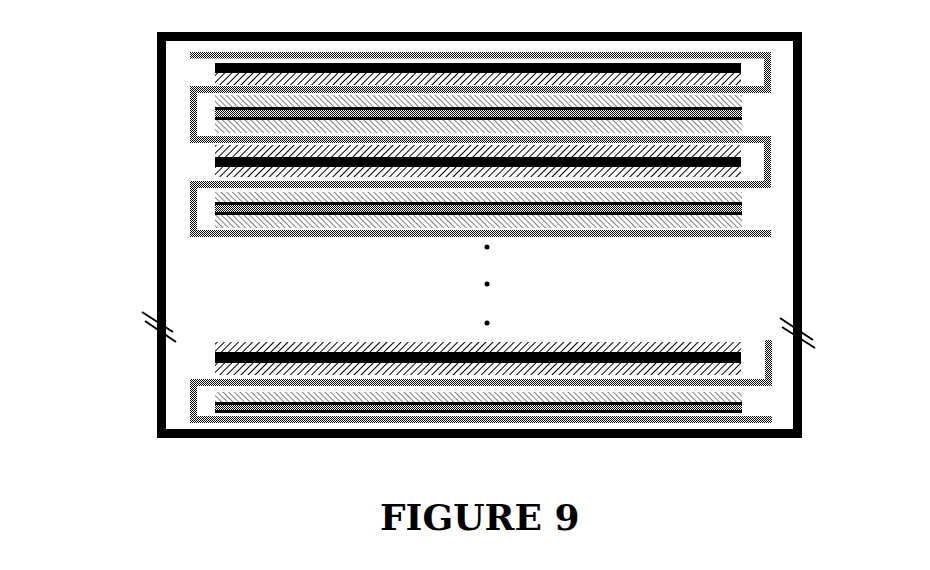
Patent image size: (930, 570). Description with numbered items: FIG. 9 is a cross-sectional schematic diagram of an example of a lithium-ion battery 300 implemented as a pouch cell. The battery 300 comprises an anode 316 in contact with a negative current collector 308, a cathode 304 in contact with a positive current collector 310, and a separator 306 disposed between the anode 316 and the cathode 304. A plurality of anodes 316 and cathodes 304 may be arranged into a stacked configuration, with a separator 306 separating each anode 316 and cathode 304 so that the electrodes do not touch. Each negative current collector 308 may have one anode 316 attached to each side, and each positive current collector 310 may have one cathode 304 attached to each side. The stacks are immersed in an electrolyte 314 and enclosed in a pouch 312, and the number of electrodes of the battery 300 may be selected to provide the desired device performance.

The lithium-ion battery 300 is at (114, 232).
The cathode 304 is at (742, 101).
The separator 306 is at (190, 132).
The negative current collector 308 is at (215, 67).
The positive current collector 310 is at (742, 116).
The pouch 312 is at (802, 63).
The electrolyte 314 is at (790, 212).
The anode 316 is at (215, 85).